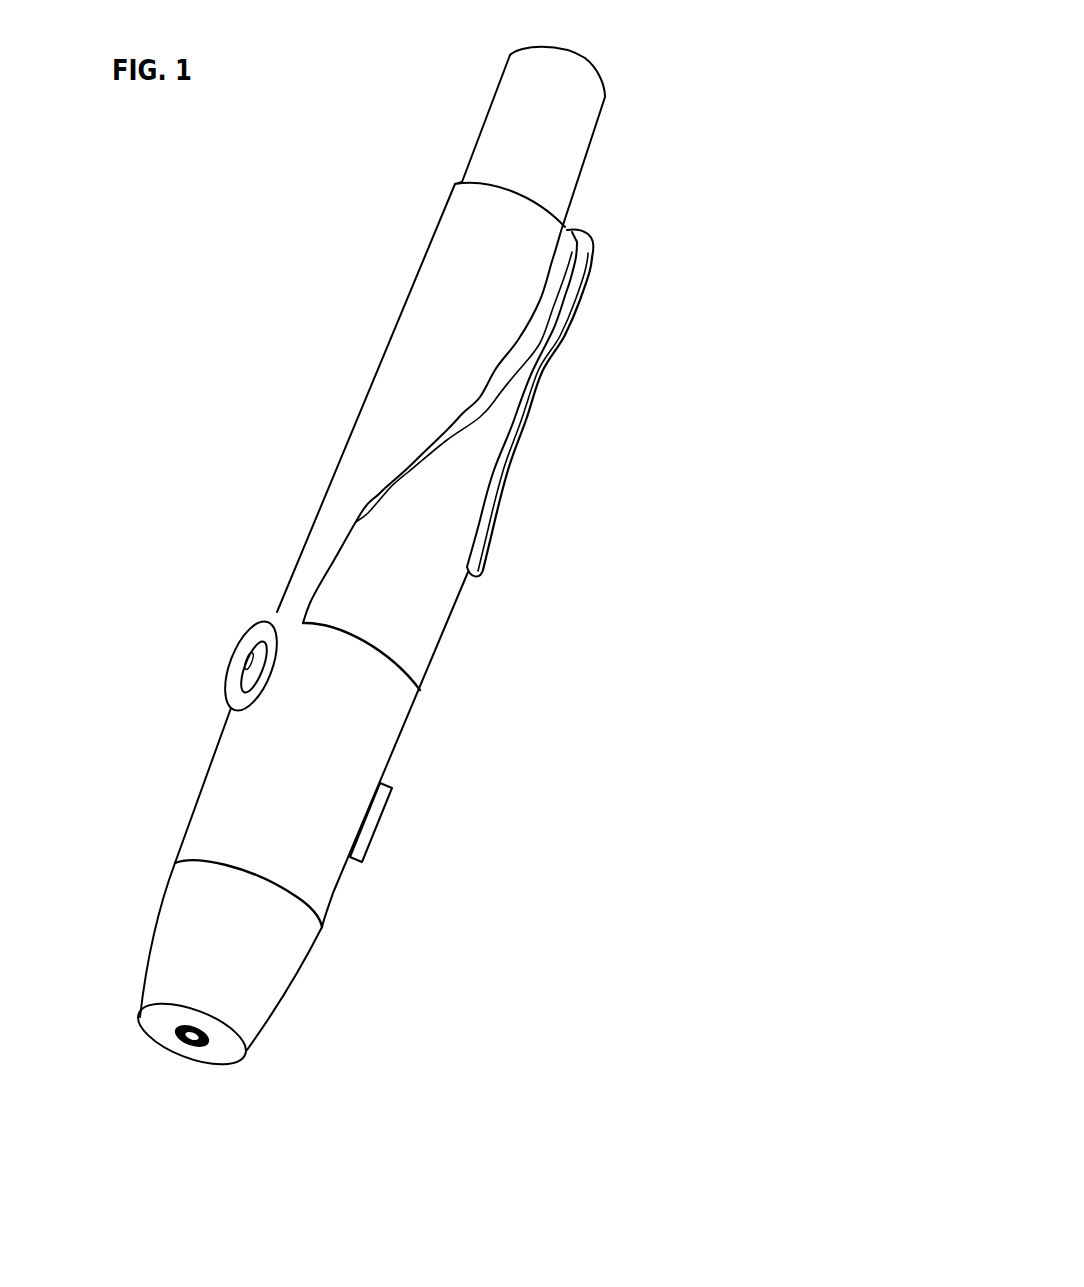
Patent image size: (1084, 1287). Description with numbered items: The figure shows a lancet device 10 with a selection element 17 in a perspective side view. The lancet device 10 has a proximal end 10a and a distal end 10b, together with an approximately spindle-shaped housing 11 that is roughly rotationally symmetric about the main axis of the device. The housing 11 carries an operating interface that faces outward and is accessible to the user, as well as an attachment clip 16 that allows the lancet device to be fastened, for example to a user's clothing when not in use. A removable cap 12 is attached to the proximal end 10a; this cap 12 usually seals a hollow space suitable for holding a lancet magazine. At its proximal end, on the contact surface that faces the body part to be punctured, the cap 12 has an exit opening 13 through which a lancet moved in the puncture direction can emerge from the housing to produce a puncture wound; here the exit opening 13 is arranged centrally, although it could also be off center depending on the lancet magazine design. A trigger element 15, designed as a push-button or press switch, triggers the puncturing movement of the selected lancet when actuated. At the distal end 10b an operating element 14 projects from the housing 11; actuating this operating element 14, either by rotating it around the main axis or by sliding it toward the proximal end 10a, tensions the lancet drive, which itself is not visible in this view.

The lancet device 10 is at (771, 289).
The proximal end 10a is at (142, 1047).
The distal end 10b is at (597, 50).
The housing 11 is at (242, 782).
The removable cap 12 is at (287, 965).
The exit opening 13 is at (193, 1047).
The operating element 14 is at (498, 127).
The trigger element 15 is at (228, 657).
The attachment clip 16 is at (500, 548).
The selection element 17 is at (388, 821).